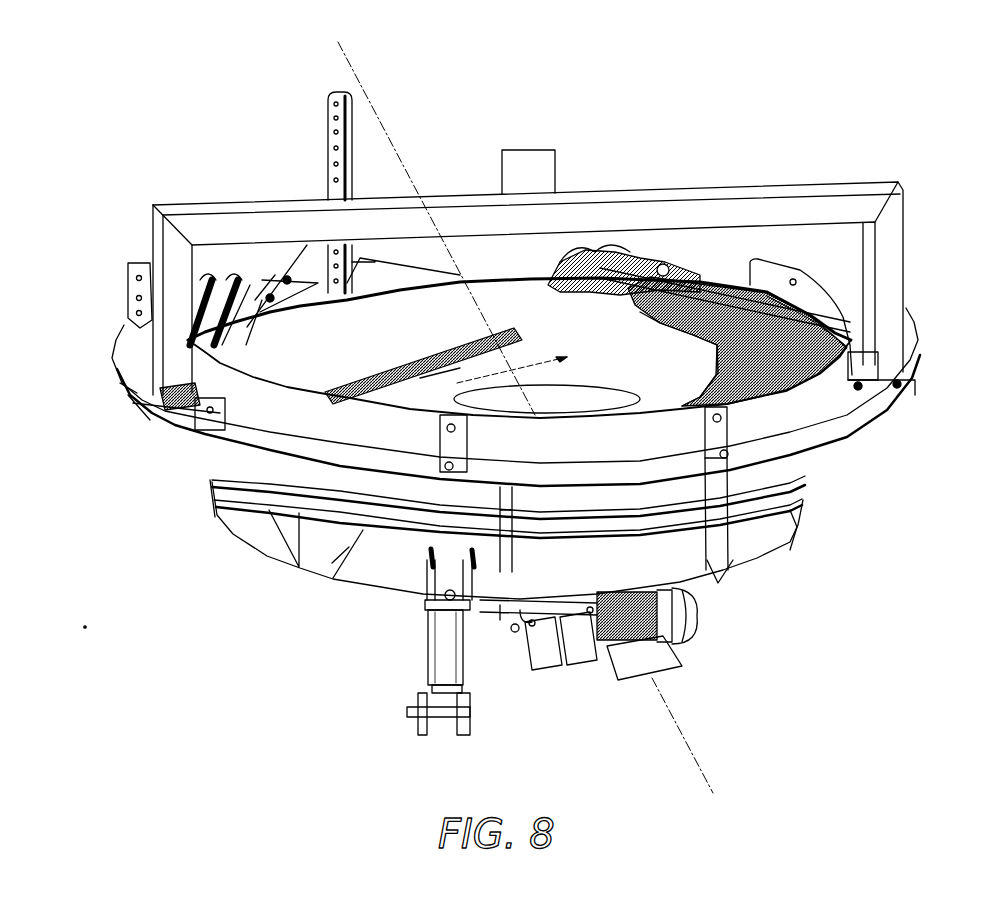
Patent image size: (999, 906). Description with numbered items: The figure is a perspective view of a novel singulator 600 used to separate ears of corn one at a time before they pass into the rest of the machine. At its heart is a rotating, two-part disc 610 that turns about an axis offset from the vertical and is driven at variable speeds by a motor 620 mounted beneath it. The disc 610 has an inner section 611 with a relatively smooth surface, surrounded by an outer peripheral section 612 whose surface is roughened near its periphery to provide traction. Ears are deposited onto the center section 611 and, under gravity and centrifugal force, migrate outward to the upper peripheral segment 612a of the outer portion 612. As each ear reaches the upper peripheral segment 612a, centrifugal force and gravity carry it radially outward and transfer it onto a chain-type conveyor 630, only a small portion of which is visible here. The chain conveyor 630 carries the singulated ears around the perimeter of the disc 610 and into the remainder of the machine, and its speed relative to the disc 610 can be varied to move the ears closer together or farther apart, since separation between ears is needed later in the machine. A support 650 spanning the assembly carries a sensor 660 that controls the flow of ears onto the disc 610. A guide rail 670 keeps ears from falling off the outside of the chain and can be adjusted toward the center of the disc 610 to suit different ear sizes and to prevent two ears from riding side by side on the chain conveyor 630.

The singulator 600 is at (475, 137).
The two-part disc 610 is at (680, 393).
The inner section 611 is at (655, 366).
The outer peripheral section 612 is at (790, 388).
The upper peripheral segment 612a is at (810, 320).
The motor 620 is at (700, 617).
The chain-type conveyor 630 is at (713, 273).
The support 650 is at (853, 181).
The sensor 660 is at (546, 150).
The guide rail 670 is at (420, 440).